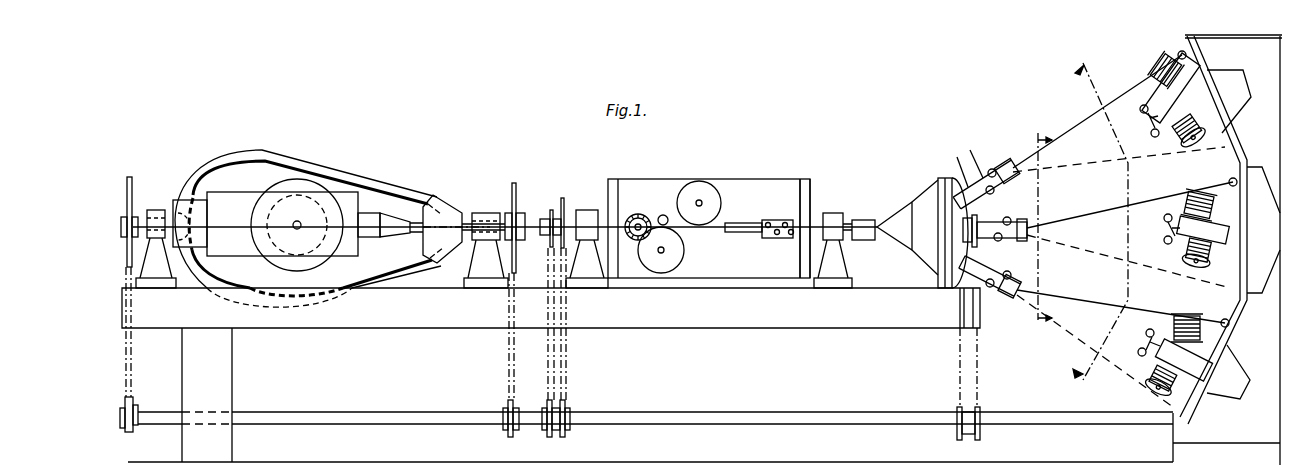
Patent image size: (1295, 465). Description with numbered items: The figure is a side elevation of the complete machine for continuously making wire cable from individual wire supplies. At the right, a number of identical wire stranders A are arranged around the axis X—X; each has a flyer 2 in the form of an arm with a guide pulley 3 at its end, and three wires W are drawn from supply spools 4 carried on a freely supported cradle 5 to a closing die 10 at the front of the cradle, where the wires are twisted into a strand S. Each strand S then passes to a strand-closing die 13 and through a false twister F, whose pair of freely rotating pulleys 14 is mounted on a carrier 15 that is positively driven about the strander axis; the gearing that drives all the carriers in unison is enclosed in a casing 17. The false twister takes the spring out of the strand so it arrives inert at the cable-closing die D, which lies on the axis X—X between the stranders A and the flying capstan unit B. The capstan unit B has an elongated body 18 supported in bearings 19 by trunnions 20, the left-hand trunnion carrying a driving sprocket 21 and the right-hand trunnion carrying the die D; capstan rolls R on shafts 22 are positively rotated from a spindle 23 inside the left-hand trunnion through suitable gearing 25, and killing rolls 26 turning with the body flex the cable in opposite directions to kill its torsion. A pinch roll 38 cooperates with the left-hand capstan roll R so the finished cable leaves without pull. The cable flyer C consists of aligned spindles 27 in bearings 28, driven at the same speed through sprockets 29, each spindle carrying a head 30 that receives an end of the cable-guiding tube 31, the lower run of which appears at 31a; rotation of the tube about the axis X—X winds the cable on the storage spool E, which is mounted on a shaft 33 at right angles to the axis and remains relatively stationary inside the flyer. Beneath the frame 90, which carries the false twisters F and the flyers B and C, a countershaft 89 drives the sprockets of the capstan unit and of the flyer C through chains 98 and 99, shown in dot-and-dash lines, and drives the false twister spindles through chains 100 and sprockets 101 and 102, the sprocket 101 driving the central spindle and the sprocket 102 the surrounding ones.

The flyer 2 is at (1092, 229).
The guide pulley 3 is at (1036, 228).
The spools 4 is at (1164, 68).
The cradle 5 is at (1152, 97).
The closing die 10 is at (1168, 135).
The strand-closing die 13 is at (1005, 167).
The false twister pulleys 14 is at (973, 156).
The carrier 15 is at (955, 165).
The casing 17 is at (925, 245).
The capstan body 18 is at (783, 190).
The bearings 19 is at (583, 210).
The trunnions 20 is at (846, 232).
The driving sprocket 21 is at (563, 198).
The capstan roll shafts 22 is at (662, 257).
The spindle 23 is at (554, 210).
The bevel gear 25 is at (640, 213).
The killing rolls 26 is at (769, 234).
The spindles 27 is at (468, 222).
The bearings 28 is at (152, 208).
The sprockets 29 is at (129, 176).
The head 30 is at (192, 203).
The cable guiding tube 31 is at (315, 157).
The guard lower portion 31a is at (299, 300).
The spool shaft 33 is at (299, 228).
The pinch roll 38 is at (664, 215).
The countershaft 89 is at (872, 414).
The frame 90 is at (886, 330).
The chain 98 is at (565, 376).
The chain 99 is at (132, 376).
The chains 100 is at (980, 390).
The sprocket 101 is at (958, 238).
The sprocket 102 is at (966, 246).
The wire stranders A is at (1138, 98).
The flying capstan unit B is at (752, 185).
The cable flyer C is at (343, 182).
The cable-closing die D is at (863, 222).
The cable storage spool E is at (283, 180).
The false twister F is at (992, 170).
The capstan rolls R is at (702, 183).
The strand S is at (1068, 132).
The wires W is at (1150, 115).
The axis X— X is at (505, 228).